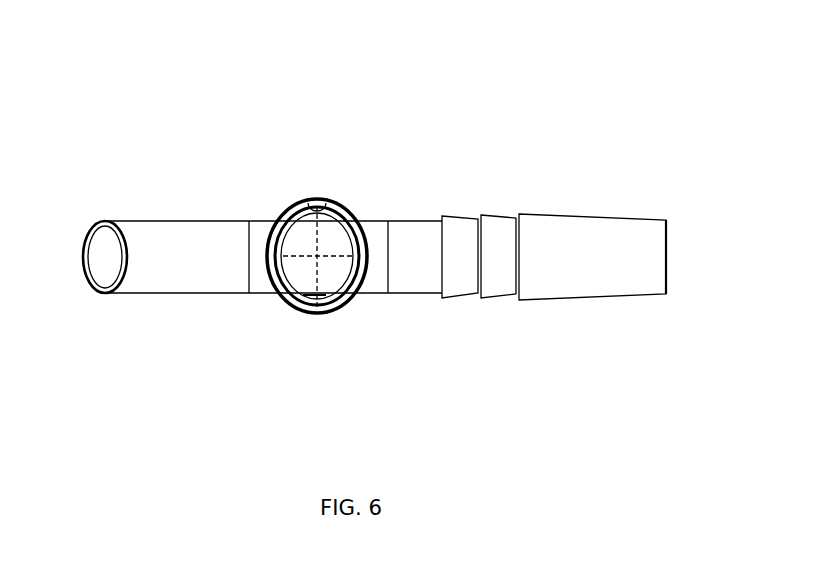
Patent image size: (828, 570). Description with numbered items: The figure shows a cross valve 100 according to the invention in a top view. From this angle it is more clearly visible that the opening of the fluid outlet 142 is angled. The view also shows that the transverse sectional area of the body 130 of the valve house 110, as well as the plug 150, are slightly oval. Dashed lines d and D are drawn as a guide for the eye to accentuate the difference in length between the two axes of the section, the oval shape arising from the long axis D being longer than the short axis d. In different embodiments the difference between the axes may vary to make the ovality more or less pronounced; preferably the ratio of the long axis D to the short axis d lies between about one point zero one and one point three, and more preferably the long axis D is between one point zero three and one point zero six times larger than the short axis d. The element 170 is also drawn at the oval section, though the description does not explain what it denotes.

The cross valve 100 is at (200, 101).
The valve house 110 is at (600, 288).
The body 130 is at (330, 200).
The fluid outlet 142 is at (107, 257).
The plug 150 is at (322, 296).
The ring body 170 is at (303, 272).
The long axis D is at (316, 238).
The short axis d is at (343, 255).